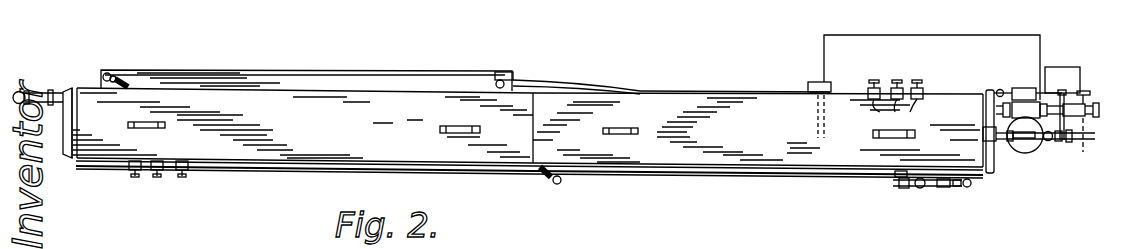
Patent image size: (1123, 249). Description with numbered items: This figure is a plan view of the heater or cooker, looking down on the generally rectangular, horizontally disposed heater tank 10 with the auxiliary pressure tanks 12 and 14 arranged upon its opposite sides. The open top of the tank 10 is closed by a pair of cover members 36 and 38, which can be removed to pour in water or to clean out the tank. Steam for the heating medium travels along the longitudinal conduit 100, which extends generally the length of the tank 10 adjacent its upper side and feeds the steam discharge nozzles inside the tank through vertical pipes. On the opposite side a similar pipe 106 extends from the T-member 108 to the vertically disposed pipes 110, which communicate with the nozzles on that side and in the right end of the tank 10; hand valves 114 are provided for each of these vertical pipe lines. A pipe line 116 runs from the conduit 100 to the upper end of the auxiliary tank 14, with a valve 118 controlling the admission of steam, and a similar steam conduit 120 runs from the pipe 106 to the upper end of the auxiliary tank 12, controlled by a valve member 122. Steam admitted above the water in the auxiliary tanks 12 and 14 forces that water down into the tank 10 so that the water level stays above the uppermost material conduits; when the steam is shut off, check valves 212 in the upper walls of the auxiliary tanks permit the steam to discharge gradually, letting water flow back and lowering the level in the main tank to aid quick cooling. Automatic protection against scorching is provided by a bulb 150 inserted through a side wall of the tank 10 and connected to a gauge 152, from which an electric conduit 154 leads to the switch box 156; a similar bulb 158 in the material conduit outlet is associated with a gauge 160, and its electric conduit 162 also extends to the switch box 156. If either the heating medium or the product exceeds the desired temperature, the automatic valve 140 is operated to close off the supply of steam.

The heater tank 10 is at (398, 125).
The auxiliary pressure tank 12 is at (298, 75).
The auxiliary pressure tank 14 is at (706, 182).
The cover member 36 is at (310, 150).
The cover member 38 is at (805, 160).
The longitudinal conduit 100 is at (505, 170).
The pipe 106 is at (947, 88).
The T-member 108 is at (982, 135).
The vertically disposed pipes 110 is at (899, 124).
The hand valves 114 is at (178, 178).
The pipe line 116 is at (903, 188).
The valve 118 is at (922, 190).
The steam conduit 120 is at (775, 92).
The valve member 122 is at (505, 70).
The automatic valve 140 is at (1026, 147).
The bulb 150 is at (816, 113).
The gauge 152 is at (813, 82).
The electric conduit 154 is at (863, 35).
The switch box 156 is at (1028, 80).
The bulb 158 is at (1055, 143).
The gauge 160 is at (1086, 90).
The electric conduit 162 is at (1050, 67).
The check valves 212 is at (121, 78).